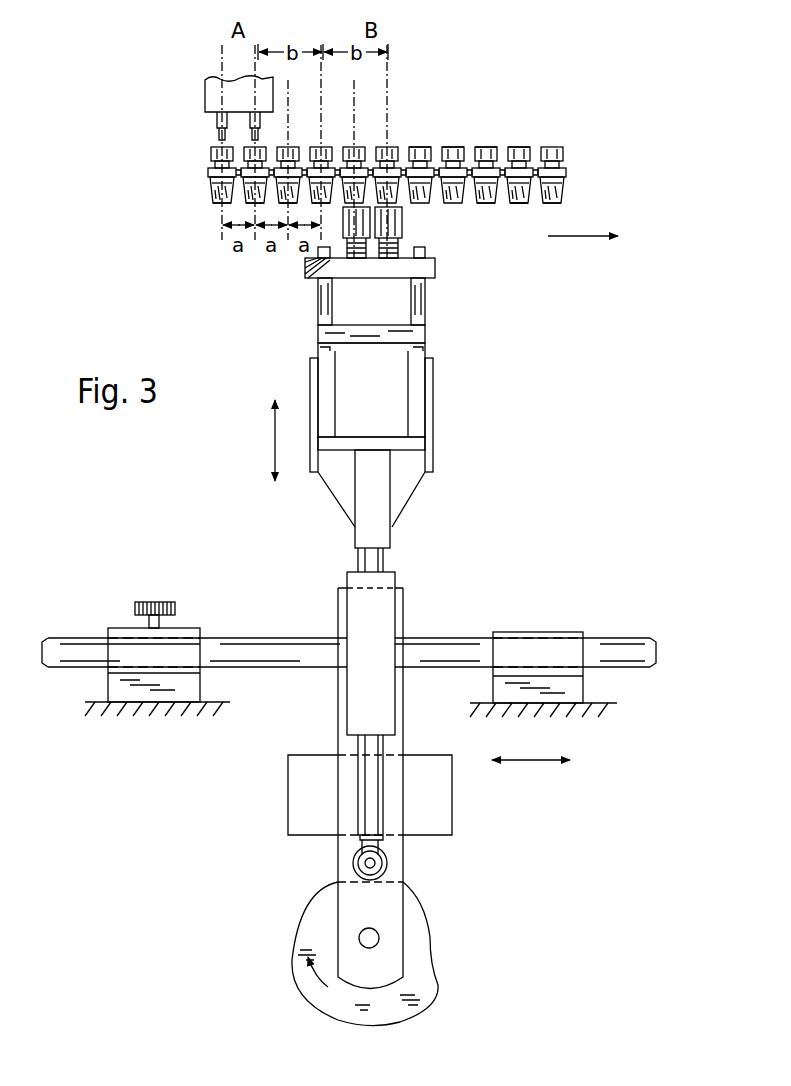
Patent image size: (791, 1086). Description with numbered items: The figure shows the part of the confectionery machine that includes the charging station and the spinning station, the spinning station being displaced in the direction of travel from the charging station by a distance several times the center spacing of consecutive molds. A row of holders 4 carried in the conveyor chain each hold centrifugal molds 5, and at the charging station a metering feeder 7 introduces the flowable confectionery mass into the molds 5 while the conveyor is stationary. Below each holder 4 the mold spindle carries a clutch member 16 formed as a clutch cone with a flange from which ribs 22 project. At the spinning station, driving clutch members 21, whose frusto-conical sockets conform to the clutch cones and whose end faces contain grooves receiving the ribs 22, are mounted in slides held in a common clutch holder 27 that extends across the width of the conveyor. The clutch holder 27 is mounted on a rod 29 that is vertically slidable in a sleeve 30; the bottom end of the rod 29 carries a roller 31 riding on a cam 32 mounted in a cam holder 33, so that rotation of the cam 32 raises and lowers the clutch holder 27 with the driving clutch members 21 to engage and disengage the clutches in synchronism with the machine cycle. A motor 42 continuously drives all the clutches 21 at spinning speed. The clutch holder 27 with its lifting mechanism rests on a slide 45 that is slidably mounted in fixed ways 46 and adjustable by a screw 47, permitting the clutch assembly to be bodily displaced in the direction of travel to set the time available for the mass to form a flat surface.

The holder 4 is at (212, 172).
The mold 5 is at (517, 147).
The metering feeder 7 is at (210, 95).
The clutch member 16 is at (250, 203).
The driving clutch member 21 is at (343, 226).
The ribs 22 is at (316, 203).
The clutch holder 27 is at (327, 312).
The rod 29 is at (370, 563).
The sleeve 30 is at (372, 633).
The roller 31 is at (357, 863).
The cam 32 is at (427, 977).
The cam holder 33 is at (395, 853).
The motor 42 is at (433, 780).
The slide 45 is at (613, 650).
The fixed ways 46 is at (120, 638).
The screw 47 is at (157, 602).